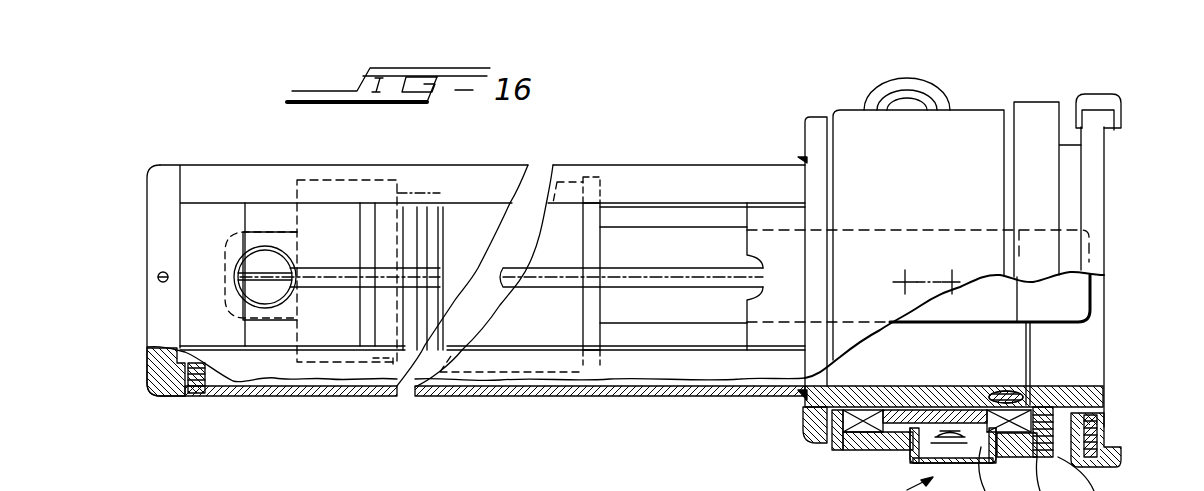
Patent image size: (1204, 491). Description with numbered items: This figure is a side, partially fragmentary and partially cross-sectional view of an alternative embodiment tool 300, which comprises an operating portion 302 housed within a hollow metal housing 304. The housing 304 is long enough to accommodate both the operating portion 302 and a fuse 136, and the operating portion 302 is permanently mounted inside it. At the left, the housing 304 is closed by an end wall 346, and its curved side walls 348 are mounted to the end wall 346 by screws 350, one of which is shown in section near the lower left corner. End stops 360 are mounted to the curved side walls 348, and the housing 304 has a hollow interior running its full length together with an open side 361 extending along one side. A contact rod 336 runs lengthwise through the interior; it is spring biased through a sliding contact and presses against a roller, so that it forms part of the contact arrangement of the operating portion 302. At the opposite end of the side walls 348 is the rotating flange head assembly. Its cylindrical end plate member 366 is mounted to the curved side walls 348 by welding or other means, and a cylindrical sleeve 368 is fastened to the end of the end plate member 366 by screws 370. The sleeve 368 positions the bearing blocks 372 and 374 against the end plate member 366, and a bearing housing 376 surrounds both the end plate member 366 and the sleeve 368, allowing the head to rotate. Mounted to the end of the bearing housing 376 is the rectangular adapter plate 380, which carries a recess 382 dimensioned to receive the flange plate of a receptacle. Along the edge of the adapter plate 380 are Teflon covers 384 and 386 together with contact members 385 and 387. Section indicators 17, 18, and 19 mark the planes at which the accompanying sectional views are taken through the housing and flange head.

The section line 17- 17 is at (160, 104).
The section line 18- 18 is at (245, 131).
The section line 19- 19 is at (947, 41).
The fuse 136 is at (603, 224).
The tool 300 is at (617, 138).
The operating portion 302 is at (337, 327).
The hollow metal housing 304 is at (648, 164).
The contact rod 336 is at (340, 262).
The end wall 346 is at (147, 217).
The curved side walls 348 is at (477, 164).
The screws 350 is at (183, 390).
The end stops 360 is at (227, 340).
The open side 361 is at (283, 336).
The cylindrical end plate member 366 is at (808, 442).
The cylindrical sleeve 368 is at (1024, 398).
The screws 370 is at (1001, 397).
The bearing block 372 is at (875, 423).
The bearing block 374 is at (1031, 410).
The bearing housing 376 is at (967, 108).
The adapter plate 380 is at (1107, 177).
The recess 382 is at (1067, 115).
The Teflon cover 384 is at (1121, 448).
The contact member 385 is at (1104, 423).
The Teflon cover 386 is at (1124, 101).
The contact member 387 is at (1109, 140).